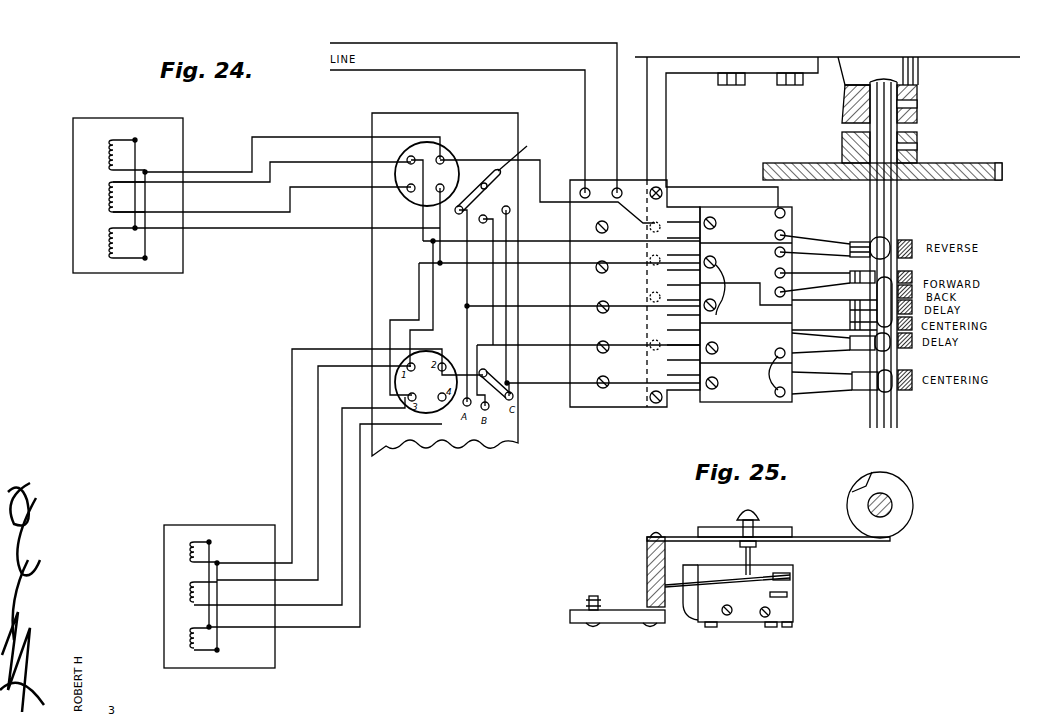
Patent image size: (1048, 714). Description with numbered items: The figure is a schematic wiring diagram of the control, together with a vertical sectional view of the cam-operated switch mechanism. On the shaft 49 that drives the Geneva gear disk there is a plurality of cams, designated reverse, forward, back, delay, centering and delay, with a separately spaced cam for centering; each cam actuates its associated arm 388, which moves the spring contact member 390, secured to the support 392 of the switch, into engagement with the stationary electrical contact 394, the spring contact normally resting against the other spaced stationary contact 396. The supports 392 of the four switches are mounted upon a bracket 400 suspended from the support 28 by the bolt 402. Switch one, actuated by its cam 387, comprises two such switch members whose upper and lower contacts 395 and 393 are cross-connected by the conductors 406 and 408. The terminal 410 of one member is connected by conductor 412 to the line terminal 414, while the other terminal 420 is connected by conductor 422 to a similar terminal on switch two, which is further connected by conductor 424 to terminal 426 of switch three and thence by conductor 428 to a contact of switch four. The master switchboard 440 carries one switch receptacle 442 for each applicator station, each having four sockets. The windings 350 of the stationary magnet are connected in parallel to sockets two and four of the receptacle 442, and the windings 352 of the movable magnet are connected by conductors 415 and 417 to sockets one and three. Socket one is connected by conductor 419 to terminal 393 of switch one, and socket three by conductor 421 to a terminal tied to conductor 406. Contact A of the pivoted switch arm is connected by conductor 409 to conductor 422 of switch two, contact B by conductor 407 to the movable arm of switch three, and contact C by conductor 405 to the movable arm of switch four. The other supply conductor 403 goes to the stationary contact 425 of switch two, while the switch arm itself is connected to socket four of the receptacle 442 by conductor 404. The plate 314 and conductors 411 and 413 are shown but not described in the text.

In FIG. 24, the support 28 is at (979, 58).
In FIG. 24, the shaft 49 is at (880, 215).
In FIG. 25, the shaft 49 is at (893, 500).
In FIG. 24, the mounting plate 314 is at (953, 163).
In FIG. 24, the magnet windings 350 is at (103, 152).
In FIG. 24, the magnet windings 352 is at (103, 195).
In FIG. 25, the cam 387 is at (872, 484).
In FIG. 24, the arm 388 is at (838, 246).
In FIG. 25, the arm 388 is at (812, 537).
In FIG. 25, the spring contact member 390 is at (688, 580).
In FIG. 25, the support 392 is at (647, 575).
In FIG. 24, the lower contact 393 is at (784, 232).
In FIG. 25, the lower contact 393 is at (766, 628).
In FIG. 25, the stationary electrical contact 394 is at (793, 600).
In FIG. 24, the upper contact 395 is at (782, 208).
In FIG. 25, the upper contact 395 is at (786, 628).
In FIG. 25, the stationary electrical contact 396 is at (780, 577).
In FIG. 24, the bracket 400 is at (657, 125).
In FIG. 25, the bracket 400 is at (570, 612).
In FIG. 24, the bolt 402 is at (786, 86).
In FIG. 24, the conductor 403 is at (410, 72).
In FIG. 24, the conductor 404 is at (462, 190).
In FIG. 24, the conductor 405 is at (548, 385).
In FIG. 24, the conductor 406 is at (792, 242).
In FIG. 24, the conductor 407 is at (548, 347).
In FIG. 24, the conductor 408 is at (772, 212).
In FIG. 24, the conductor 409 is at (548, 308).
In FIG. 24, the terminal 410 is at (710, 216).
In FIG. 25, the terminal 410 is at (718, 628).
In FIG. 24, the conductor 411 is at (288, 140).
In FIG. 24, the conductor 412 is at (648, 188).
In FIG. 24, the conductor 413 is at (315, 225).
In FIG. 24, the line terminal 414 is at (526, 40).
In FIG. 24, the conductor 415 is at (313, 164).
In FIG. 24, the conductor 417 is at (321, 190).
In FIG. 24, the conductor 419 is at (545, 243).
In FIG. 24, the terminal 420 is at (718, 263).
In FIG. 24, the conductor 421 is at (545, 265).
In FIG. 24, the conductor 422 is at (700, 283).
In FIG. 24, the conductor 424 is at (792, 330).
In FIG. 24, the stationary contact 425 is at (788, 291).
In FIG. 24, the terminal 426 is at (786, 355).
In FIG. 24, the conductor 428 is at (778, 398).
In FIG. 24, the master switchboard 440 is at (372, 297).
In FIG. 24, the switch receptacle 442 is at (424, 150).